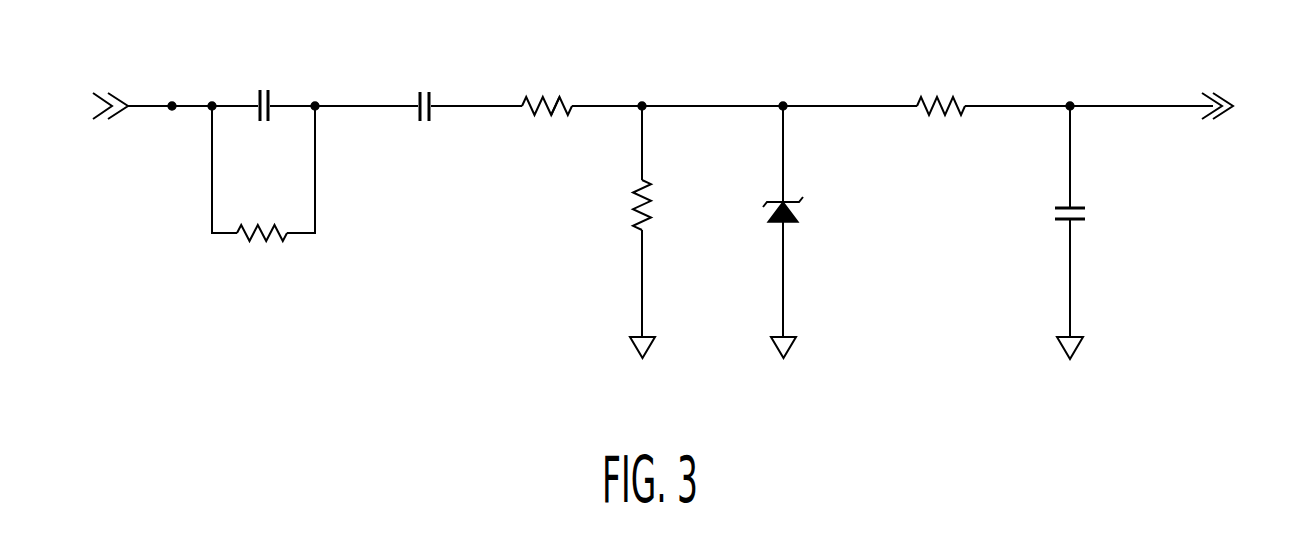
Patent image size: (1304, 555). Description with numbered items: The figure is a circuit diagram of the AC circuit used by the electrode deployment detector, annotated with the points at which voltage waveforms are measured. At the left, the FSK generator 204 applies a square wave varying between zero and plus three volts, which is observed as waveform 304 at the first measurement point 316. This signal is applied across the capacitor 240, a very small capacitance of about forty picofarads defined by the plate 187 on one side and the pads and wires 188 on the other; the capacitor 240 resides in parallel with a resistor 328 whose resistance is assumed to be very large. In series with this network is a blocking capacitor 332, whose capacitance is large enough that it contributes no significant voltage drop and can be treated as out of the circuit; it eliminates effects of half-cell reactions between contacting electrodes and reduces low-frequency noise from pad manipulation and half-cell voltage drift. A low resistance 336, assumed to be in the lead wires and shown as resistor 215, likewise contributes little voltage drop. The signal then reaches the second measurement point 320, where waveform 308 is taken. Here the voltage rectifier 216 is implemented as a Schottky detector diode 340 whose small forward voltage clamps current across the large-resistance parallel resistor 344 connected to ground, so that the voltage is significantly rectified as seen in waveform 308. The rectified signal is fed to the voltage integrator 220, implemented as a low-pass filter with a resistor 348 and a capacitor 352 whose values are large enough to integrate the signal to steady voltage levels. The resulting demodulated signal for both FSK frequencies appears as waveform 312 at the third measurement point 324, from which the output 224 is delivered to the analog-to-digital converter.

The FSK generator 204 is at (58, 122).
The measurement point 316 is at (172, 112).
The voltage waveform 304 is at (212, 102).
The capacitor 240 is at (291, 119).
The plate 187 is at (258, 123).
The pads and wires 188 is at (270, 123).
The resistor 328 is at (262, 244).
The blocking capacitor 332 is at (413, 114).
The resistor 215 is at (547, 91).
The low resistance 336 is at (549, 117).
The voltage waveform 308 is at (641, 101).
The measurement point 320 is at (645, 109).
The parallel resistor 344 is at (639, 204).
The zener diode D1 340 is at (785, 230).
The voltage rectifier 216 is at (791, 228).
The resistor 348 is at (930, 114).
The voltage integrator 220 is at (1010, 152).
The voltage waveform 312 is at (1072, 101).
The measurement point 324 is at (1075, 109).
The capacitor 352 is at (1060, 224).
The output to ADC 224 is at (1256, 138).